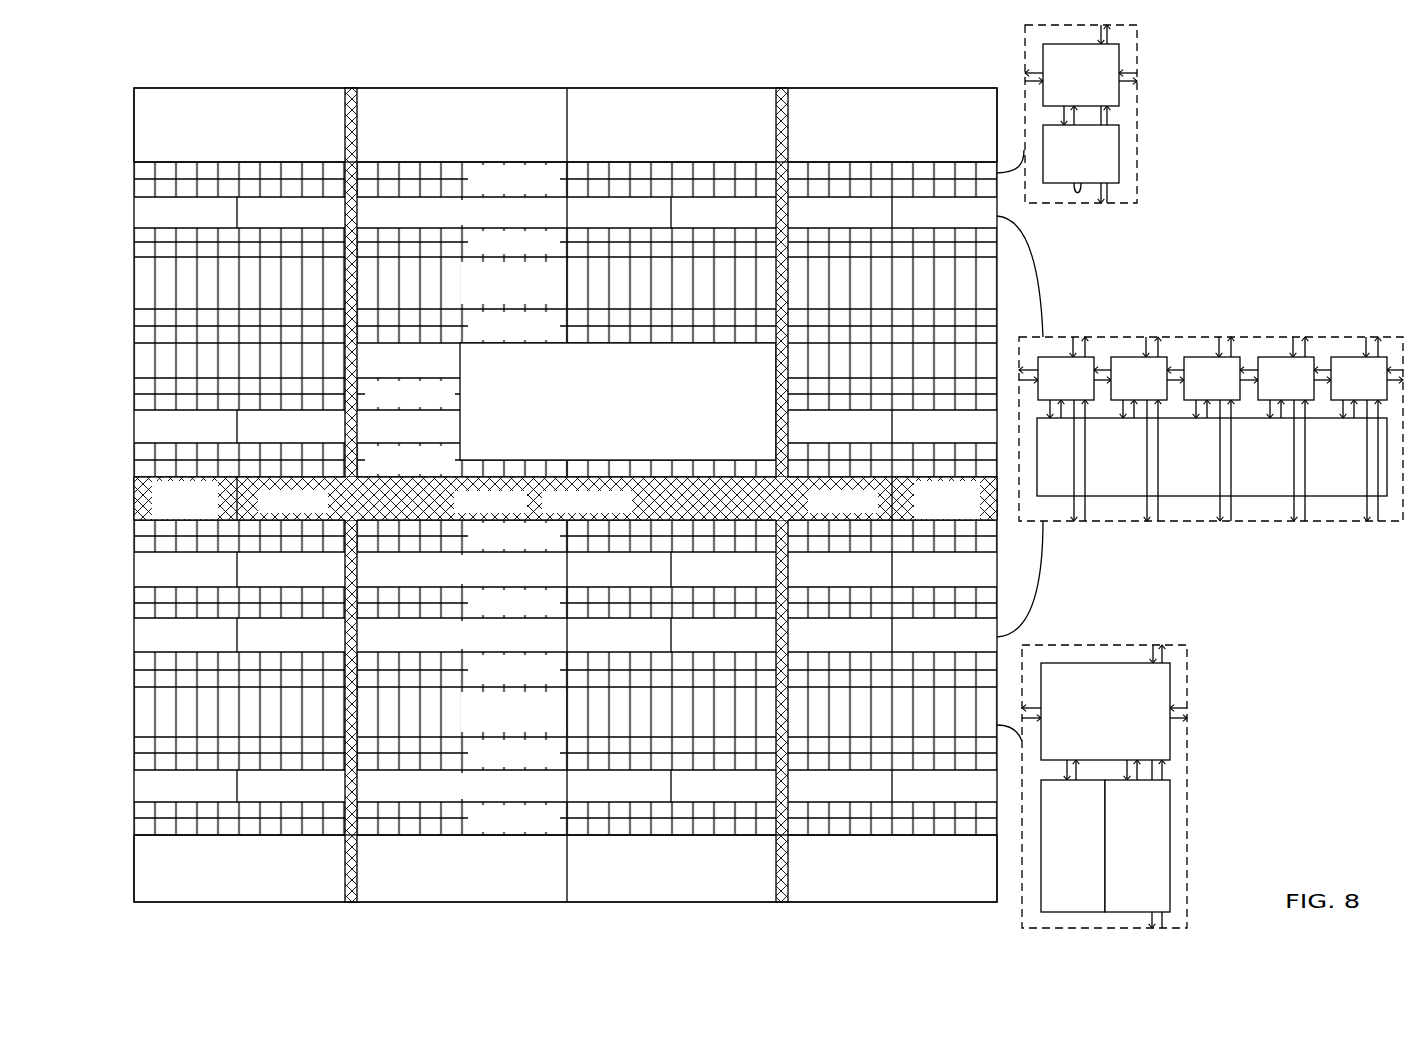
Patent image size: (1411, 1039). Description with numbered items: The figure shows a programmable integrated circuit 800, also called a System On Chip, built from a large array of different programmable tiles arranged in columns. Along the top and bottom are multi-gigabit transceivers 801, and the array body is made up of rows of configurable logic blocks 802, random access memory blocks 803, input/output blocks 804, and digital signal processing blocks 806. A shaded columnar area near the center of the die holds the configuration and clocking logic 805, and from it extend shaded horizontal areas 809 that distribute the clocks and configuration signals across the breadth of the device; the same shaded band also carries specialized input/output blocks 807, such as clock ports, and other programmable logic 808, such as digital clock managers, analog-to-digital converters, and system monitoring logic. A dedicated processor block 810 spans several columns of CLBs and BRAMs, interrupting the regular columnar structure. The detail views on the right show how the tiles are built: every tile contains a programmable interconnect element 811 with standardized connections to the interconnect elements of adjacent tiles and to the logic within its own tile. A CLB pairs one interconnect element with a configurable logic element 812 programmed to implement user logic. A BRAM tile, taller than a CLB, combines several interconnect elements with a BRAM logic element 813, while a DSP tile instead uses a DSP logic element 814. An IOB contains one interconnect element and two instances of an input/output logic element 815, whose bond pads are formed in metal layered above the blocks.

The programmable integrated circuit 800 is at (1311, 101).
The multi-gigabit transceivers 801 is at (502, 136).
The configurable logic blocks 802 is at (553, 189).
The random access memory blocks 803 is at (558, 223).
The input/output blocks 804 is at (552, 293).
The configuration and clocking logic 805 is at (670, 511).
The digital signal processing blocks 806 is at (553, 645).
The specialized input/output blocks 807 is at (323, 510).
The other programmable logic 808 is at (566, 500).
The horizontal areas 809 is at (351, 88).
The processor block 810 is at (668, 413).
The programmable interconnect element 811 is at (1093, 95).
The configurable logic element 812 is at (1087, 176).
The BRAM logic element 813 is at (1207, 481).
The DSP logic element 814 is at (1347, 481).
The input/output logic element 815 is at (1087, 876).